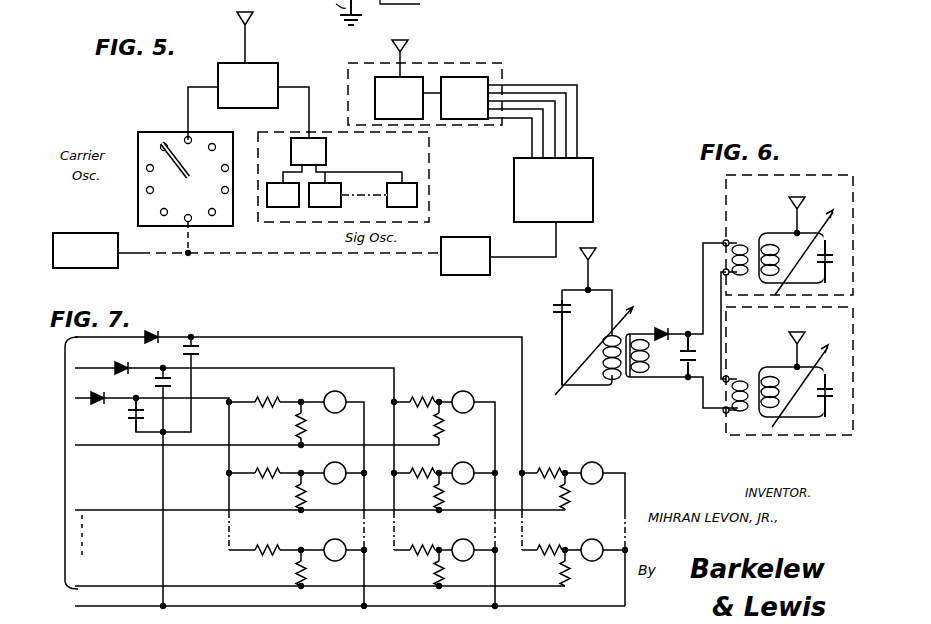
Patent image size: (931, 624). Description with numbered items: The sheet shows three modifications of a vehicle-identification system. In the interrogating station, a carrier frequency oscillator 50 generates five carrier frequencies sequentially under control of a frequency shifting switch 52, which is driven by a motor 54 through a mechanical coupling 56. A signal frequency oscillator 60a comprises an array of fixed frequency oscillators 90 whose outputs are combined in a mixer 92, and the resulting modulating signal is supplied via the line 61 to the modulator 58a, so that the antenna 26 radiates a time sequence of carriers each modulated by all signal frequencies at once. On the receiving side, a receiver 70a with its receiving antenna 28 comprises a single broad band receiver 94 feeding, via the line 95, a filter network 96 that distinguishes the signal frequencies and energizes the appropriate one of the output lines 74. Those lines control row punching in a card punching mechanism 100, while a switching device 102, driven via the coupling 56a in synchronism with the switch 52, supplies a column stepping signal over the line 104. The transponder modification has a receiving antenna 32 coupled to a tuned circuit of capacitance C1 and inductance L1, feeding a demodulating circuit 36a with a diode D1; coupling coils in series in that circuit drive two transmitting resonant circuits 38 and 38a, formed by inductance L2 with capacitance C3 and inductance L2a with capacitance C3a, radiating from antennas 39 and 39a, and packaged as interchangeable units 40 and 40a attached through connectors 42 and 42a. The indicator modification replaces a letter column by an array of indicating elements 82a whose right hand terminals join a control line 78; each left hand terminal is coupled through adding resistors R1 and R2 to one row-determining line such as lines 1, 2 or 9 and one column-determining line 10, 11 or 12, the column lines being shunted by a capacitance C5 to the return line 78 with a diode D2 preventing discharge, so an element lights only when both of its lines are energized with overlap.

In FIG. 5, the antenna 26 is at (252, 18).
In FIG. 5, the modulator 58a is at (283, 62).
In FIG. 5, the line 61 is at (300, 85).
In FIG. 5, the carrier frequency oscillator 50 is at (161, 132).
In FIG. 5, the frequency shifting switch 52 is at (136, 196).
In FIG. 5, the motor 54 is at (118, 264).
In FIG. 5, the mechanical coupling 56 is at (190, 238).
In FIG. 5, the coupling 56a is at (358, 256).
In FIG. 5, the signal frequency oscillator 60a is at (429, 190).
In FIG. 5, the mixer 92 is at (326, 158).
In FIG. 5, the fixed frequency oscillators 90 is at (317, 229).
In FIG. 5, the receiver 70a is at (473, 58).
In FIG. 5, the receiving antenna 28 is at (406, 46).
In FIG. 5, the broad band receiver 94 is at (388, 77).
In FIG. 5, the line 95 is at (432, 95).
In FIG. 5, the filter network 96 is at (490, 80).
In FIG. 5, the output lines 74 is at (581, 142).
In FIG. 7, the output lines 74 is at (57, 463).
In FIG. 5, the card punching mechanism 100 is at (593, 200).
In FIG. 5, the line 104 is at (520, 250).
In FIG. 5, the switching device 102 is at (472, 275).
In FIG. 6, the receiving antenna 32 is at (585, 321).
In FIG. 6, the demodulating circuit 36a is at (661, 361).
In FIG. 6, the interchangeable portion 40 is at (838, 171).
In FIG. 6, the connector 42 is at (722, 240).
In FIG. 6, the transmitting resonant circuit 38 is at (802, 251).
In FIG. 6, the transmitting antenna 39 is at (803, 204).
In FIG. 6, the interchangeable unit 40a is at (785, 443).
In FIG. 6, the connector 42a is at (723, 412).
In FIG. 6, the second transmitting resonant circuit 38a is at (796, 405).
In FIG. 6, the radiating antenna 39a is at (803, 336).
In FIG. 7, the code element value line 12 is at (298, 436).
In FIG. 7, the code element value line 11 is at (234, 452).
In FIG. 7, the code element value line 10 is at (152, 467).
In FIG. 7, the code element value line 1 is at (257, 437).
In FIG. 7, the code element value line 2 is at (320, 502).
In FIG. 7, the code element value line 9 is at (320, 578).
In FIG. 7, the control line 78 is at (123, 606).
In FIG. 7, the indicating elements 82a is at (452, 394).
In FIG. 7, the diode D2 is at (136, 360).
In FIG. 7, the capacitance C5 is at (165, 472).
In FIG. 7, the adding resistor R1 is at (397, 467).
In FIG. 7, the adding resistor R2 is at (433, 494).
In FIG. 6, the capacitance C1 is at (554, 308).
In FIG. 6, the inductance L1 is at (603, 361).
In FIG. 6, the diode D1 is at (657, 321).
In FIG. 6, the inductance L2 is at (778, 260).
In FIG. 6, the capacitance C3 is at (833, 258).
In FIG. 6, the inductance L2a is at (780, 392).
In FIG. 6, the capacitance C3a is at (818, 426).